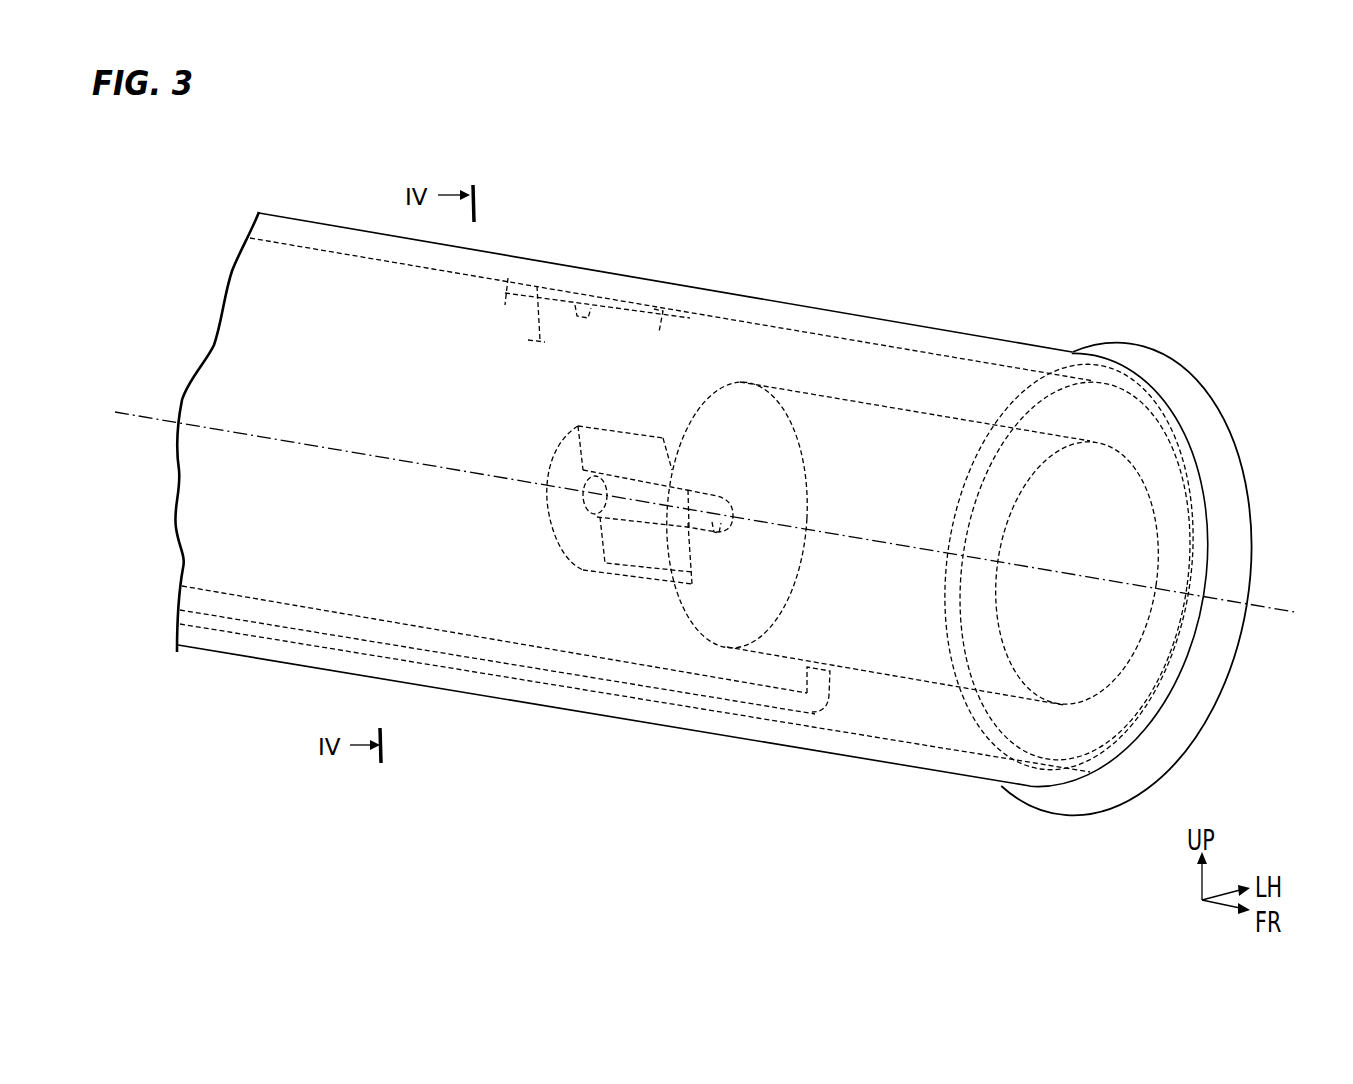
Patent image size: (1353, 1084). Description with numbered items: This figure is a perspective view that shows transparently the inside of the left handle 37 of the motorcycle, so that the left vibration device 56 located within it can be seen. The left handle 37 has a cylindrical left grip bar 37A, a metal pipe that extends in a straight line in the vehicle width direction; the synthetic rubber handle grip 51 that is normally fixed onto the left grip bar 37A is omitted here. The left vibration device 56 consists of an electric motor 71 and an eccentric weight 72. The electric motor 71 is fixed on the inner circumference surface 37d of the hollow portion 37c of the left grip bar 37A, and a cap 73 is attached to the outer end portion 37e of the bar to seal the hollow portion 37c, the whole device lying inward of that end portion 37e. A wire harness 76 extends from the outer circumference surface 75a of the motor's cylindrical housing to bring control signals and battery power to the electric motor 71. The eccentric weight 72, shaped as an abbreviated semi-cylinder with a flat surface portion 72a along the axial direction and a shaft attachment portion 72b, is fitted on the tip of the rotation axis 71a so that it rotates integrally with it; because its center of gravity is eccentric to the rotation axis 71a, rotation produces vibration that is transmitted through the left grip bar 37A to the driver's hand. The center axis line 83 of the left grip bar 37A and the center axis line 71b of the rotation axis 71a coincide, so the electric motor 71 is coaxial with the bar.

The left handle 37 is at (1116, 541).
The left grip bar 37A is at (309, 240).
The hollow portion 37c is at (536, 286).
The inner circumference surface 37d is at (591, 308).
The end portion 37e is at (1169, 668).
The handle grip 51 is at (370, 233).
The left vibration device 56 is at (738, 200).
The electric motor 71 is at (917, 518).
The rotation axis 71a is at (715, 532).
The center axis line of the rotation axis 71b is at (748, 524).
The eccentric weight 72 is at (614, 518).
The flat surface portion 72a is at (640, 550).
The shaft attachment portion 72b is at (627, 512).
The cap 73 is at (1213, 427).
The outer circumference surface 75a is at (893, 681).
The wire harness 76 is at (488, 647).
The center axis line 83 is at (250, 436).